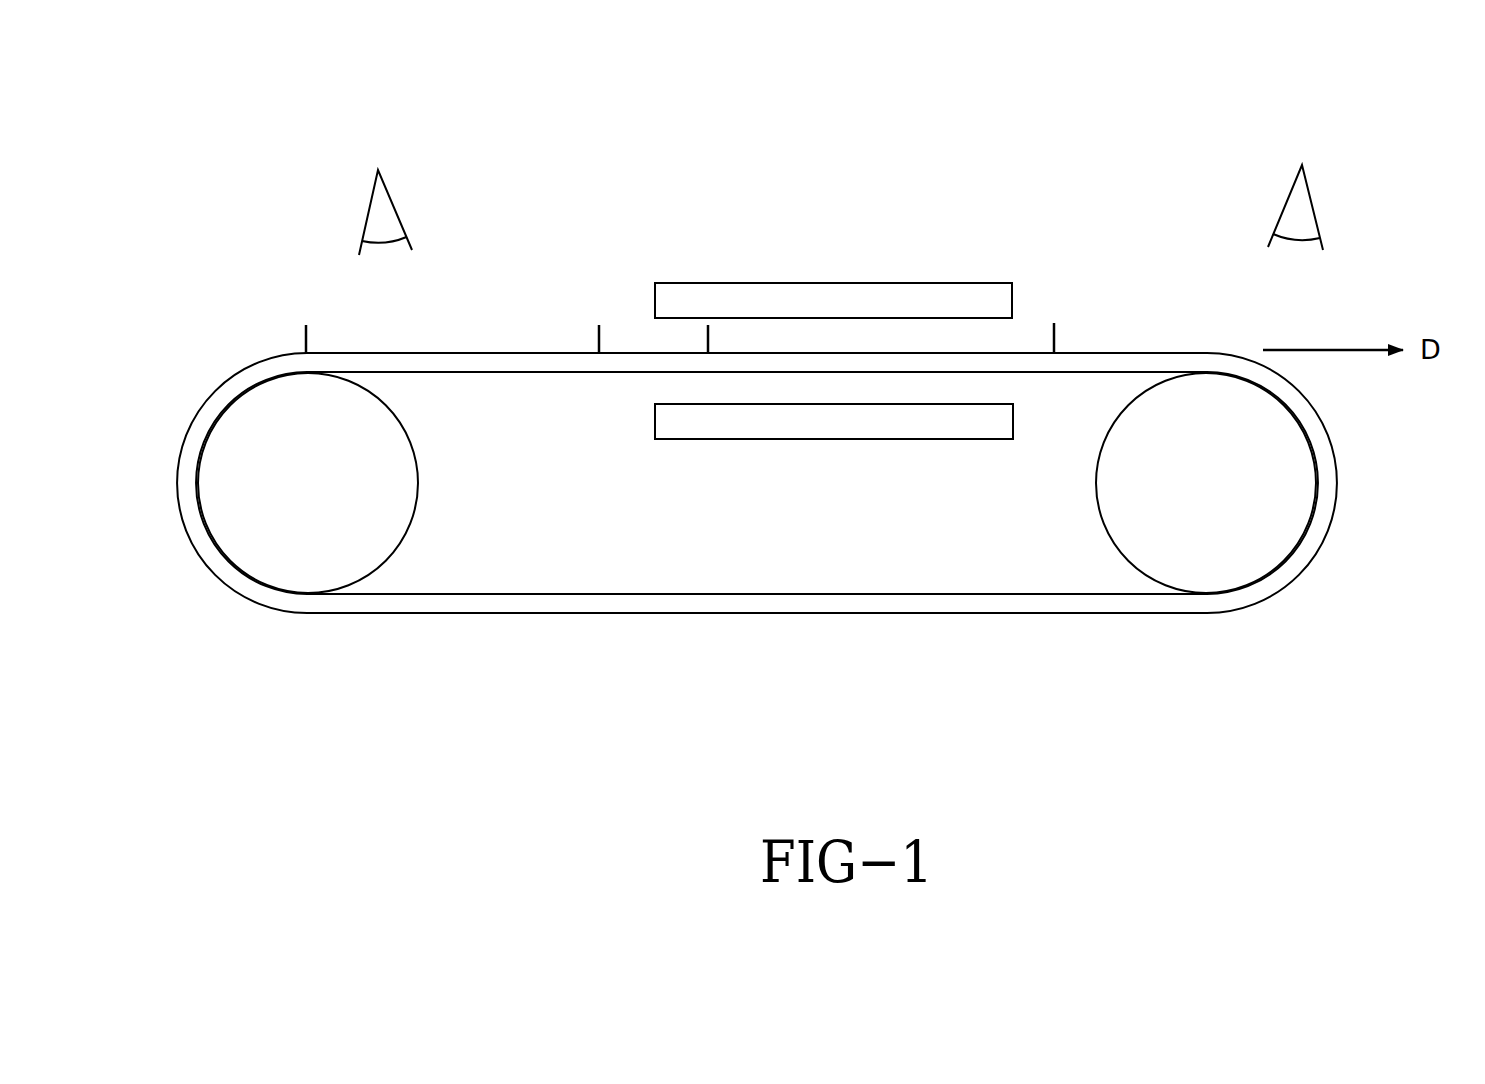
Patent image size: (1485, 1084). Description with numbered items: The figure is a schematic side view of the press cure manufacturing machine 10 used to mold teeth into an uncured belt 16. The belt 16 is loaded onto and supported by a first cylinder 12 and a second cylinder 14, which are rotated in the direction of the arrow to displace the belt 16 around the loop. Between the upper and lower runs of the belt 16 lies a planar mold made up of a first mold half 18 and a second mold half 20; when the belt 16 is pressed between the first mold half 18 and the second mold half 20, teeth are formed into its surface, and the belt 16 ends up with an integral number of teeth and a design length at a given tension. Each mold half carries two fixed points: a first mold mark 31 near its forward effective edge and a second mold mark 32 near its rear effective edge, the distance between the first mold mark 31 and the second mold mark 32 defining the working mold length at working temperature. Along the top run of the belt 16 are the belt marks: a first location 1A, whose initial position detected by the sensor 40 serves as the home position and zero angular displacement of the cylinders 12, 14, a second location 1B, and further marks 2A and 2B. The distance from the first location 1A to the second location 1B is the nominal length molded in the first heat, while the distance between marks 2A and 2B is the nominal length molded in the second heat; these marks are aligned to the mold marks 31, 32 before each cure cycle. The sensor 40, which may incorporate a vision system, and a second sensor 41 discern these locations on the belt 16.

The manufacturing machine 10 is at (1081, 166).
The first cylinder 12 is at (1226, 502).
The second cylinder 14 is at (313, 502).
The belt 16 is at (908, 372).
The first mold half 18 is at (898, 440).
The second mold half 20 is at (892, 283).
The first mold mark 31 is at (1012, 318).
The second mold mark 32 is at (655, 318).
The first location 1A is at (1059, 346).
The second location 1B is at (596, 349).
The mark 2A is at (704, 350).
The mark 2B is at (301, 350).
The sensor 40 is at (1320, 183).
The second sensor 41 is at (369, 185).